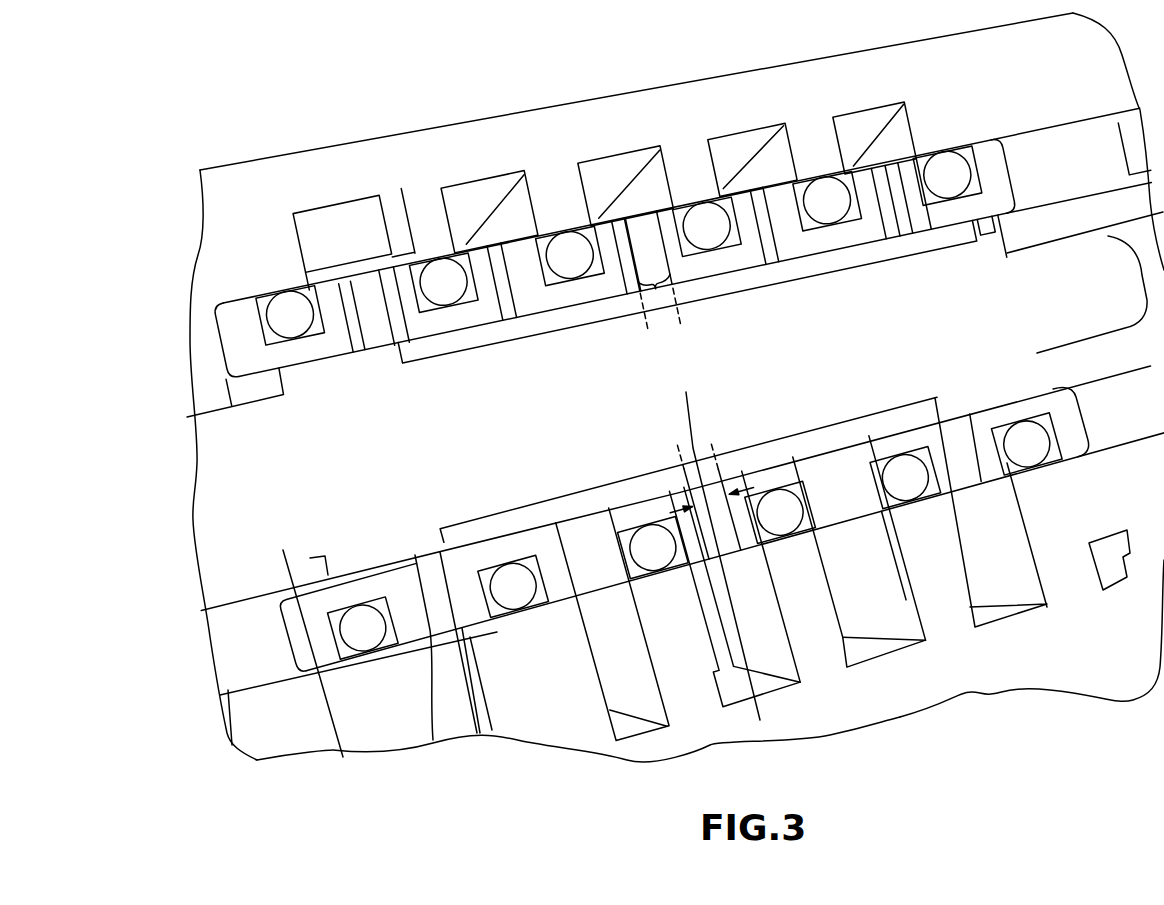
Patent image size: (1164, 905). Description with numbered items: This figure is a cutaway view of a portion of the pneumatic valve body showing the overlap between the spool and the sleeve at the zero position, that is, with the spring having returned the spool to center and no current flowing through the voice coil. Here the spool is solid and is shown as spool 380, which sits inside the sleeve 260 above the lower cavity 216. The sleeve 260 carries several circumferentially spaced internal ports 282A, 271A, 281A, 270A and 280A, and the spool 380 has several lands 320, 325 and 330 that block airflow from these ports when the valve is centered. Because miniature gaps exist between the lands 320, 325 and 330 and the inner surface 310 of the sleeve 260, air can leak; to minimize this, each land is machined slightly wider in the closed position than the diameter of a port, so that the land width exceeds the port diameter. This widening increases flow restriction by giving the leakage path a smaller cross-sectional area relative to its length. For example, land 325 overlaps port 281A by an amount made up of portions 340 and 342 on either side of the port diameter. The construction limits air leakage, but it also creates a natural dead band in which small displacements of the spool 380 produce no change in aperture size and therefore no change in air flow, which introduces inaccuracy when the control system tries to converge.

The lower cavity 216 is at (233, 661).
The sleeve 260 is at (238, 347).
The port 270A is at (767, 207).
The port 271A is at (513, 275).
The port 280A is at (892, 187).
The port 281A is at (640, 233).
The port 282A is at (367, 293).
The inner surface of the sleeve 310 is at (413, 313).
The land 320 is at (320, 360).
The land 325 is at (674, 320).
The land 330 is at (935, 228).
The overlap portion 340 is at (644, 328).
The overlap portion 342 is at (686, 320).
The spool 380 is at (343, 757).